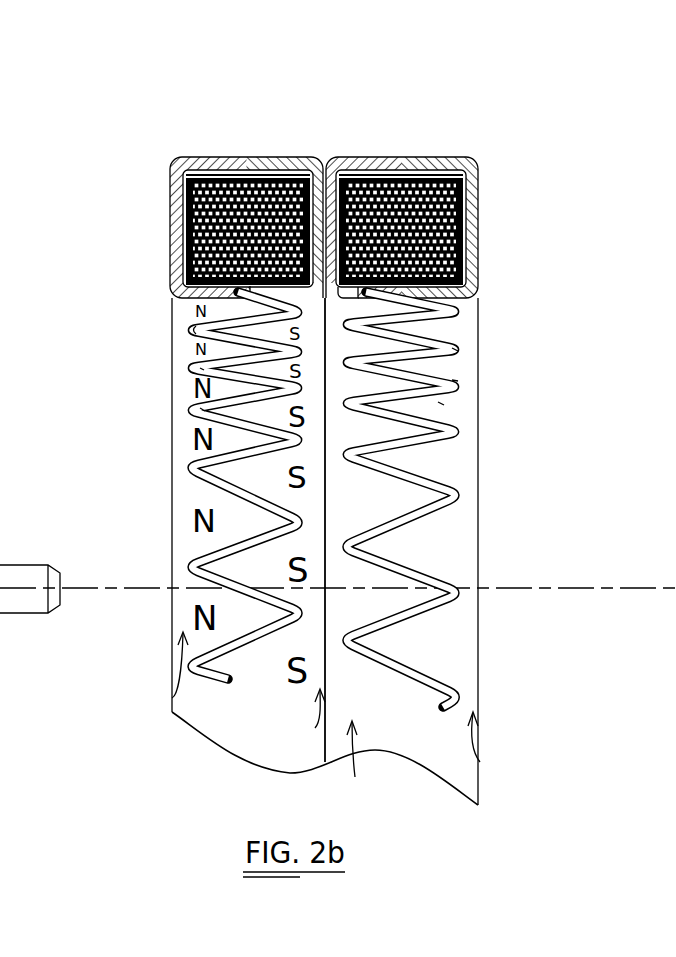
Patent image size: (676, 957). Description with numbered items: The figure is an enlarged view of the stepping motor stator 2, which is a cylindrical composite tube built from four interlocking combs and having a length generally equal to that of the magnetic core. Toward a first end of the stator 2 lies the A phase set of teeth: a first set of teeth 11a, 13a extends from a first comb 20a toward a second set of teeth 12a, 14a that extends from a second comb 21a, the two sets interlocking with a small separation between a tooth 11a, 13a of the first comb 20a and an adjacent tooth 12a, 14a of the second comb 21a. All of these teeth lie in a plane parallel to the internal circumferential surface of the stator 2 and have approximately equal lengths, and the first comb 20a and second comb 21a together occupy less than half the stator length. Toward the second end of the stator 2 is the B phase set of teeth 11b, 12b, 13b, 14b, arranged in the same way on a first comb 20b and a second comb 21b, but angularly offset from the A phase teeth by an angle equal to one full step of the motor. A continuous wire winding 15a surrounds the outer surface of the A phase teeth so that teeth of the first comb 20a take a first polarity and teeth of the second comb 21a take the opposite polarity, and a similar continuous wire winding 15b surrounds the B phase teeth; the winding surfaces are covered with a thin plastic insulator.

The stator 2 is at (402, 137).
The first set tooth of A phase 11a is at (188, 370).
The first set tooth of B phase 11b is at (440, 363).
The second set tooth of A phase 12a is at (190, 334).
The second set tooth of B phase 12b is at (458, 350).
The first set tooth of A phase 13a is at (205, 411).
The first set tooth of B phase 13b is at (440, 403).
The second set tooth of A phase 14a is at (200, 370).
The second set tooth of B phase 14b is at (457, 380).
The wire winding 15a is at (172, 240).
The wire winding 15b is at (478, 225).
The first comb 20a is at (172, 698).
The first comb 20b is at (480, 762).
The second comb 21a is at (315, 728).
The second comb 21b is at (355, 777).